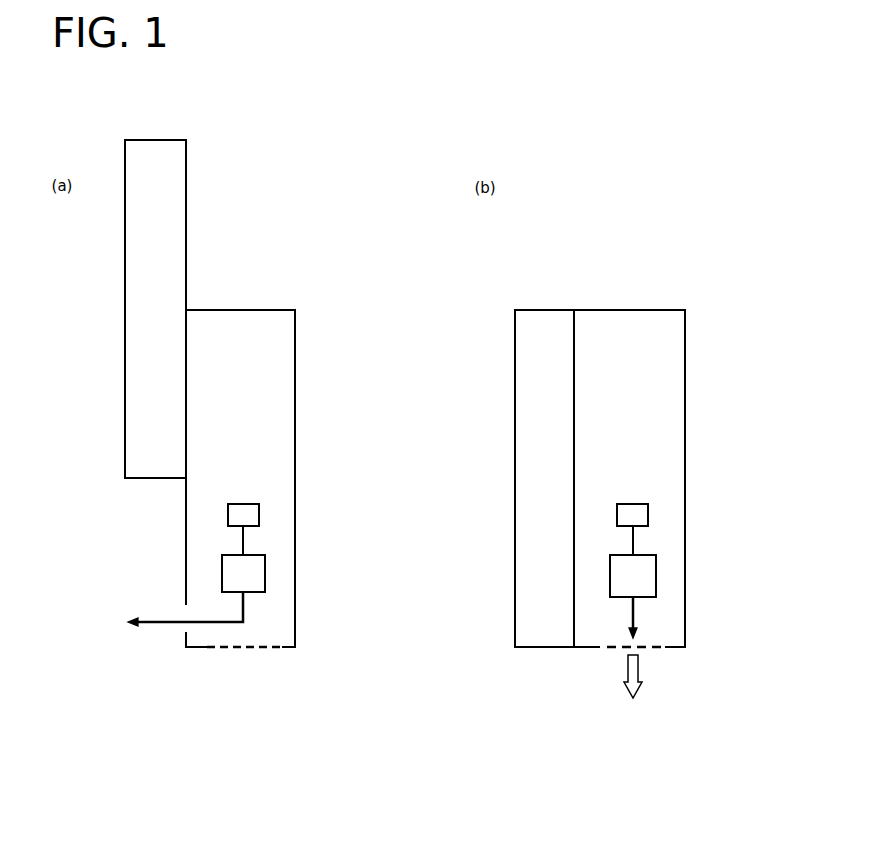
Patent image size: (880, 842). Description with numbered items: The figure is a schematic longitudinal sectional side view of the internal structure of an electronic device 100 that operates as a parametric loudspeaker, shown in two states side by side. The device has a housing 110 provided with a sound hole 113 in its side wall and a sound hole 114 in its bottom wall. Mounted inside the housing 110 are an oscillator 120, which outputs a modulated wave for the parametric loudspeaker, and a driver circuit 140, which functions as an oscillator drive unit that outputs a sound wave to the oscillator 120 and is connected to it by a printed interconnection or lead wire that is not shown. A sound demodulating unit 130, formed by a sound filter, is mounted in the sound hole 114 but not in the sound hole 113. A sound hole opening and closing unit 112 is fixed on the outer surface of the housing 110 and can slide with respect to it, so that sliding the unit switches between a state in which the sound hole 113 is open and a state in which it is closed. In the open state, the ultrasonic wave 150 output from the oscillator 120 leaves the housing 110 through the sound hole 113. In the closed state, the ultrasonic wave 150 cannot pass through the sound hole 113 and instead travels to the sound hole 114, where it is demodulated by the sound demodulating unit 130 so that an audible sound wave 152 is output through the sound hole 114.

The electronic device 100 is at (371, 289).
The housing 110 is at (208, 310).
The sound hole opening and closing unit 112 is at (186, 212).
The sound hole 113 is at (176, 605).
The sound hole 114 is at (228, 660).
The oscillator 120 is at (267, 572).
The sound demodulating unit 130 is at (268, 643).
The driver circuit 140 is at (260, 513).
The ultrasonic wave 150 is at (152, 624).
The audible sound wave 152 is at (633, 670).